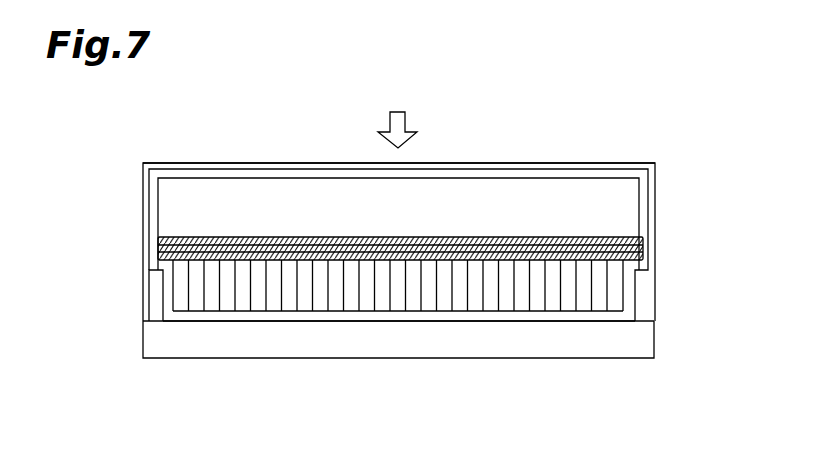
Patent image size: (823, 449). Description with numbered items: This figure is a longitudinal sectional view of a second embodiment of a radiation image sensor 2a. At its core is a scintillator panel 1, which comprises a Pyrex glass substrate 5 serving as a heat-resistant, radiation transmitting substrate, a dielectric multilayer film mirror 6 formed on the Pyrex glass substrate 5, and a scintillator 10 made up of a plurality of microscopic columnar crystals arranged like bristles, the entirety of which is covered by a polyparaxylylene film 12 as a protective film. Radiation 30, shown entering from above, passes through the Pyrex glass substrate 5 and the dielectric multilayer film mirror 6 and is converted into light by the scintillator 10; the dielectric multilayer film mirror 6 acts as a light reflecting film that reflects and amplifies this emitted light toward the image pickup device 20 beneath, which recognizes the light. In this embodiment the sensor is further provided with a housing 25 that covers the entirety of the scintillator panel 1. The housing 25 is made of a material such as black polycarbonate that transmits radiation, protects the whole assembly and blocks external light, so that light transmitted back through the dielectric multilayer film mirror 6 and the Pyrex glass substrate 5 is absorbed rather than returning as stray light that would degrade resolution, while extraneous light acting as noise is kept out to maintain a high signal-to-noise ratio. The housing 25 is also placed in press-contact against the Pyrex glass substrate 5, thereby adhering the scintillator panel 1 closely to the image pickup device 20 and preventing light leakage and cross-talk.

The scintillator panel 1 is at (375, 328).
The radiation image sensor 2a is at (638, 132).
The Pyrex glass substrate 5 is at (632, 200).
The dielectric multilayer film mirror 6 is at (643, 247).
The scintillator 10 is at (620, 293).
The polyparaxylylene film 12 is at (575, 317).
The image pickup device 20 is at (245, 356).
The housing 25 is at (546, 163).
The radiation 30 is at (397, 116).